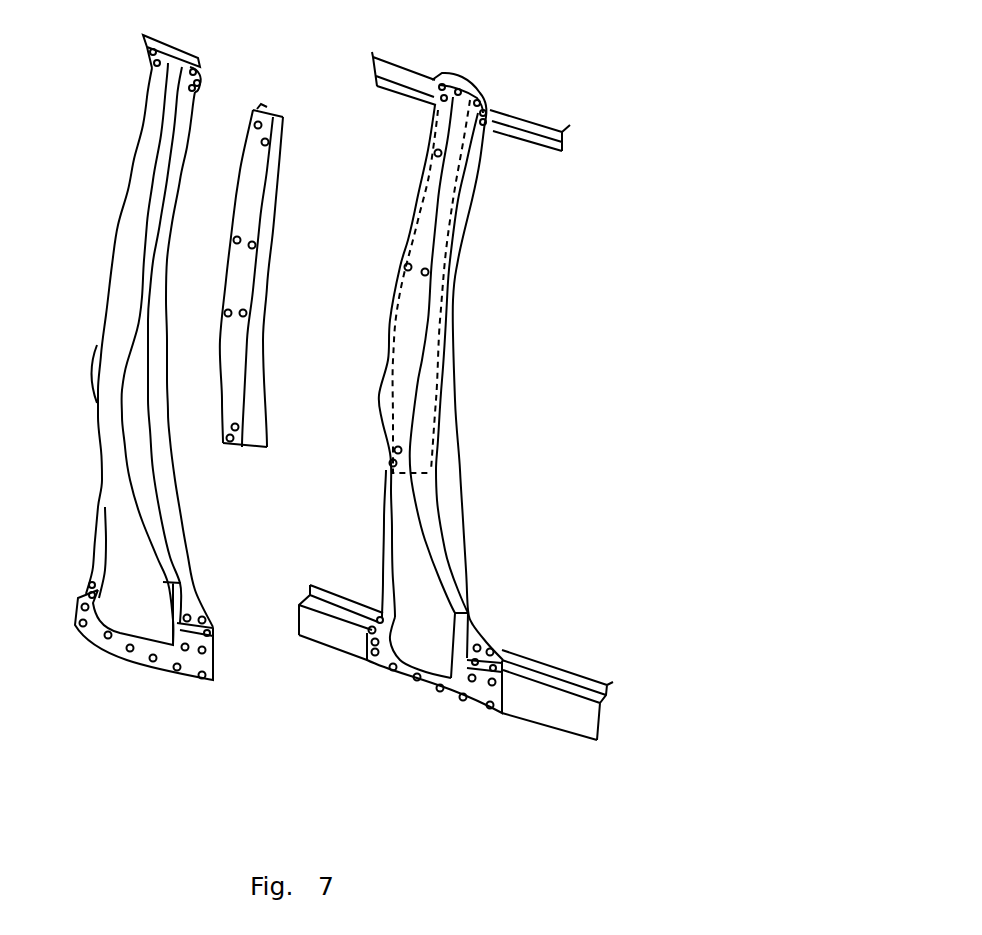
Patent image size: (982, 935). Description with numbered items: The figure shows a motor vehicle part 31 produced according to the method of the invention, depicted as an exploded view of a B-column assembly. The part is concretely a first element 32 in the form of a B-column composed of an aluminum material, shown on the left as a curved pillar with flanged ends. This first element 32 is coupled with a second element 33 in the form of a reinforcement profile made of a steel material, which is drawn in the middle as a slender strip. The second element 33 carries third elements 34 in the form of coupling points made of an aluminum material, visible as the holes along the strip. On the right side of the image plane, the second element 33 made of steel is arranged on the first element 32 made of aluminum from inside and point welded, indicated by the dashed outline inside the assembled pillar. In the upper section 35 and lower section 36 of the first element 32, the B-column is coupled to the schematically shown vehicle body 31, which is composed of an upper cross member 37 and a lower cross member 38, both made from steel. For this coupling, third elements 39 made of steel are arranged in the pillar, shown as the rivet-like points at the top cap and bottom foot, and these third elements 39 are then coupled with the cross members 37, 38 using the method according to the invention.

The motor vehicle part 31 is at (578, 265).
The first element 32 is at (113, 447).
The second element 33 is at (253, 450).
The third elements 34 is at (240, 242).
The upper section 35 is at (510, 181).
The lower section 36 is at (523, 618).
The upper cross member 37 is at (517, 118).
The lower cross member 38 is at (540, 698).
The third elements 39 is at (480, 106).